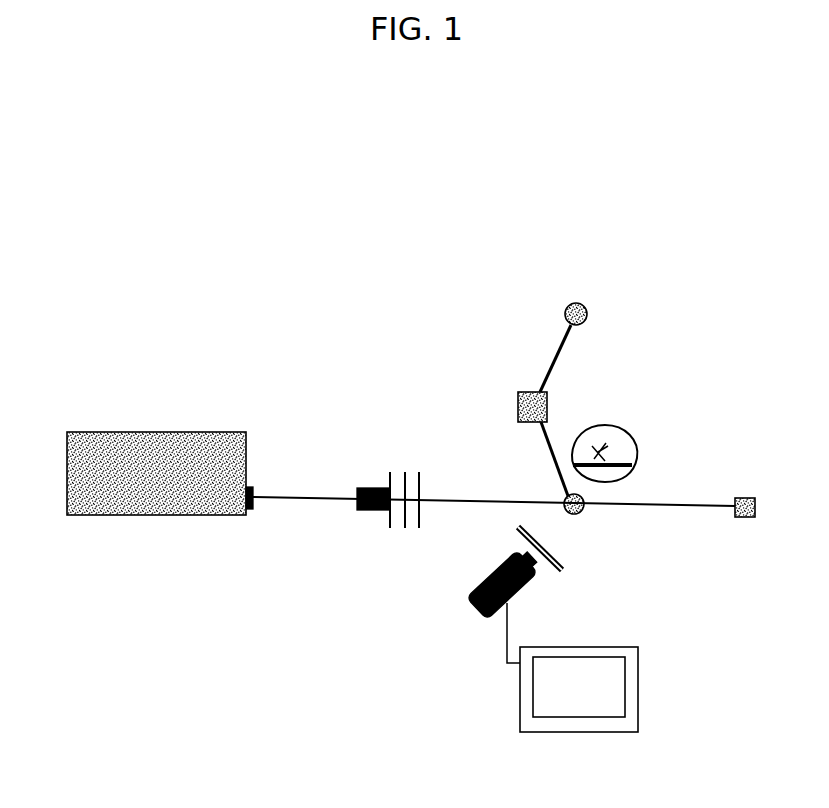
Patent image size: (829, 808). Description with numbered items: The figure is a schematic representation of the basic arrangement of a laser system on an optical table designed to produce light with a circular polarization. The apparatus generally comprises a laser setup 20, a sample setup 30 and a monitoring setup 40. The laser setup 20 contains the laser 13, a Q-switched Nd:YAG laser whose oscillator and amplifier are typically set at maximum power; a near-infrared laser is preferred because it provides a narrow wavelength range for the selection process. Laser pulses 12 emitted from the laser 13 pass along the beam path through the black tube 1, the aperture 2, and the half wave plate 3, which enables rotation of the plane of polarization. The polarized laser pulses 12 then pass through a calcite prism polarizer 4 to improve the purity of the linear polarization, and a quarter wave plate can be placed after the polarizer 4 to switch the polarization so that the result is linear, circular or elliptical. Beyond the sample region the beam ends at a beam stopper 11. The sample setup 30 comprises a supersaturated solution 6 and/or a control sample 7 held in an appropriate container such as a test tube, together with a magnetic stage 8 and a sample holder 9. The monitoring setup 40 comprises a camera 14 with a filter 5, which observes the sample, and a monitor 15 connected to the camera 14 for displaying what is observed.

The laser setup 20 is at (253, 411).
The laser 13 is at (198, 517).
The laser pulses 12 is at (494, 495).
The black tube 1 is at (373, 490).
The aperture 2 is at (386, 492).
The half wave plate 3 is at (404, 492).
The calcite prism polarizer 4 is at (419, 492).
The sample setup 30 is at (480, 393).
The control sample 7 is at (576, 314).
The sample holder 9 is at (555, 358).
The magnetic stage 8 is at (543, 444).
The supersaturated solution 6 is at (574, 504).
The beam stopper 11 is at (745, 507).
The monitoring setup 40 is at (445, 645).
The filter 5 is at (547, 554).
The camera 14 is at (470, 585).
The monitor 15 is at (520, 695).